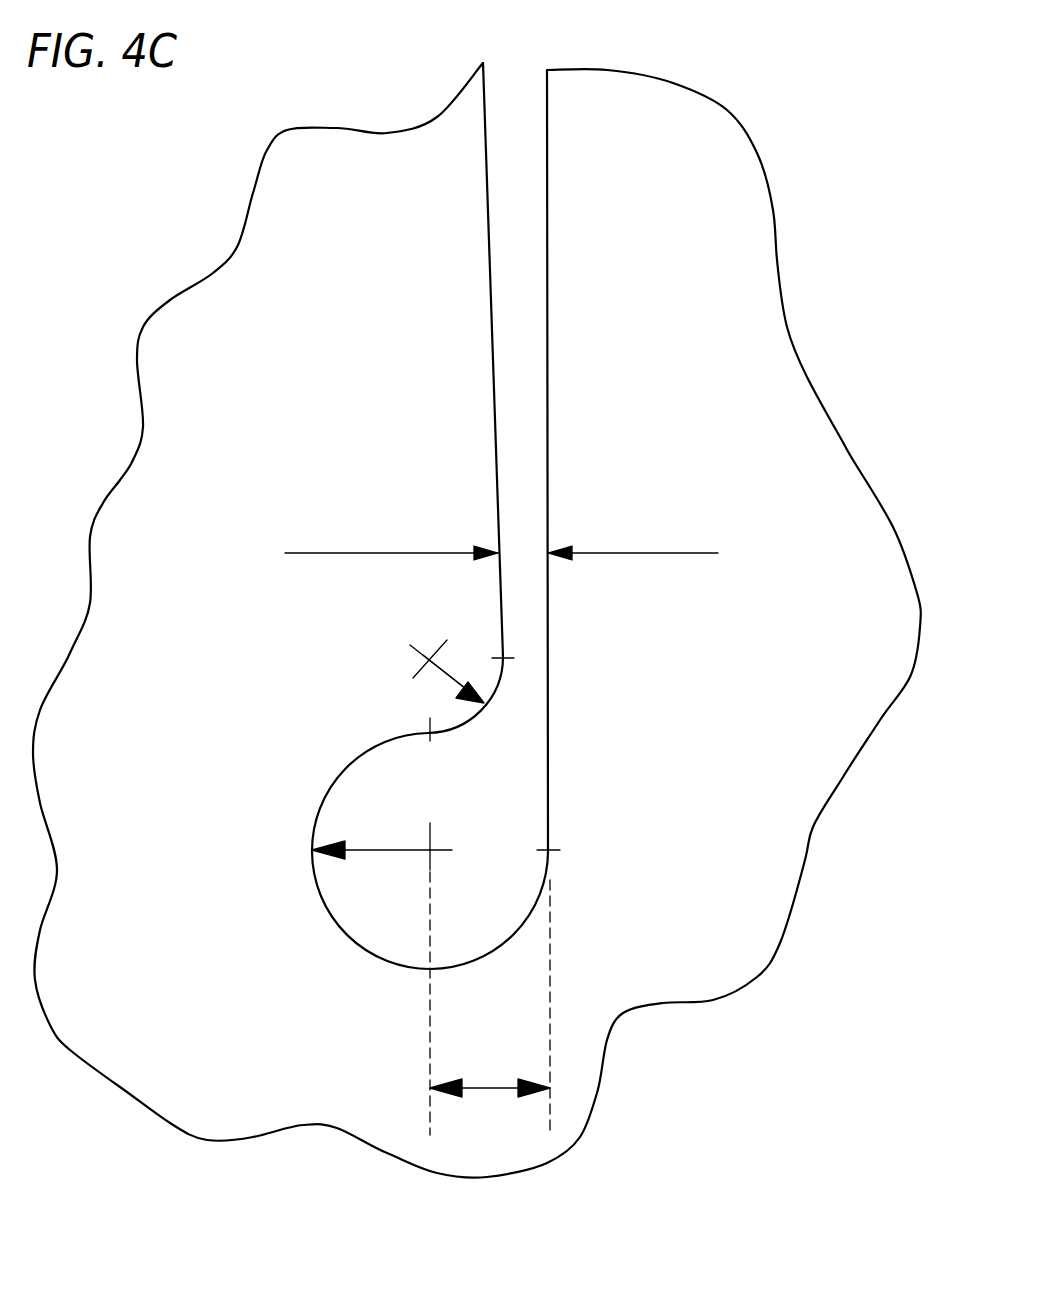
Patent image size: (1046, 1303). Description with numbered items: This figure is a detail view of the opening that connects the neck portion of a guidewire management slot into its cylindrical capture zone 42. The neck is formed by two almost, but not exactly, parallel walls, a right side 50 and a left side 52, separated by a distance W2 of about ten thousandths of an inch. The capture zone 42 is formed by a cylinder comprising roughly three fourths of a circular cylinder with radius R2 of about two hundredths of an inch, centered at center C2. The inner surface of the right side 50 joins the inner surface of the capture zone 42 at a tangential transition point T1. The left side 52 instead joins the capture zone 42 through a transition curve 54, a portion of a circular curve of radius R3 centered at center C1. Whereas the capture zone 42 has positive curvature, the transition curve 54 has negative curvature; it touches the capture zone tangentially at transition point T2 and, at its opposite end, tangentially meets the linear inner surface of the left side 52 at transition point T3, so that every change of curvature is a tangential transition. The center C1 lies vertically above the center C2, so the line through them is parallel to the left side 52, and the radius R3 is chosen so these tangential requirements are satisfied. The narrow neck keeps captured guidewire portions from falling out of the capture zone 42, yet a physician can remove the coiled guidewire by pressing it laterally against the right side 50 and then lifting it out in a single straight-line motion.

The capture zone 42 is at (373, 920).
The right side 50 is at (547, 388).
The left side 52 is at (492, 356).
The transition curve 54 is at (467, 718).
The distance W2 is at (524, 563).
The tangential transition point T1 is at (549, 850).
The tangential transition point T2 is at (433, 729).
The transition point T3 is at (505, 662).
The radius of the capture zone R2 is at (493, 1122).
The radius of the transition curve R3 is at (442, 670).
The center of the circular transition curve C1 is at (424, 657).
The center of the circular capture zone C2 is at (434, 852).